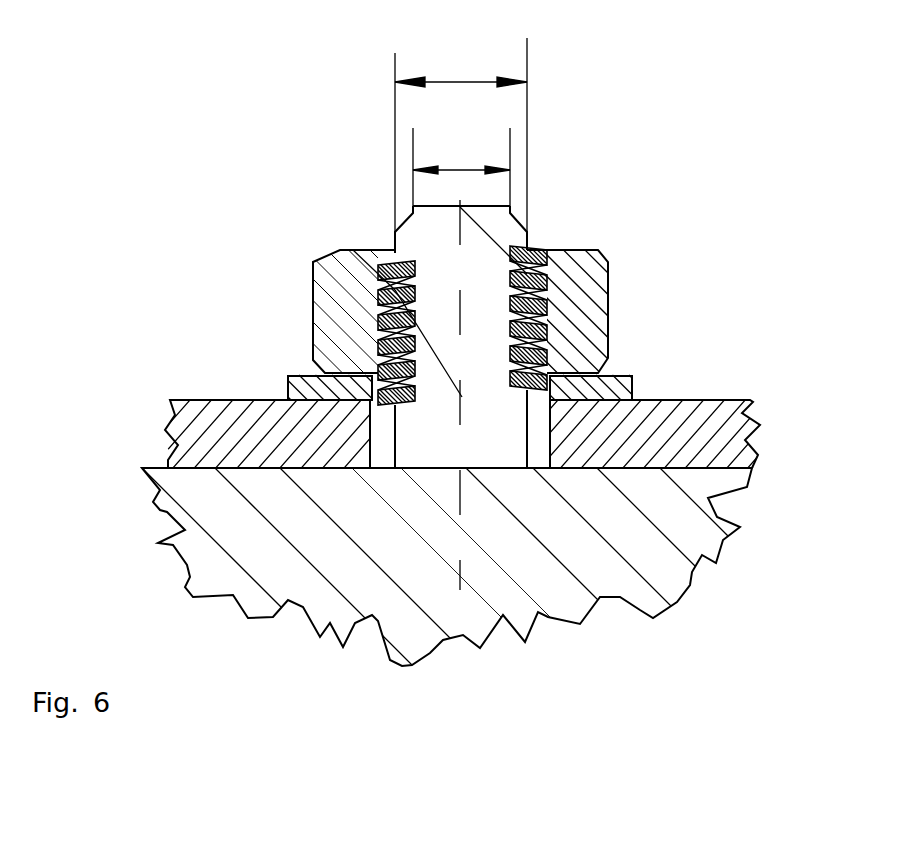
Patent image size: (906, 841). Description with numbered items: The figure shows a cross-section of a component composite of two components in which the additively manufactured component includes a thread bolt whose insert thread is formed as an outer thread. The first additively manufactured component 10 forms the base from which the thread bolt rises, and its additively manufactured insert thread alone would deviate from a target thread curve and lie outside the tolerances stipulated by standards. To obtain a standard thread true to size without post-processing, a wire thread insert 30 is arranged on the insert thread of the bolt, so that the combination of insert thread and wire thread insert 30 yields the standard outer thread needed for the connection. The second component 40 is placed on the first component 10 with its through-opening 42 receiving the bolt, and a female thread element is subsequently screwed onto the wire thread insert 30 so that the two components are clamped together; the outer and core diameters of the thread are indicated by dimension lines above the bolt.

The first additively manufactured component 10 is at (648, 567).
The wire thread insert 30 is at (540, 277).
The second component 40 is at (725, 398).
The through-opening 42 is at (632, 387).